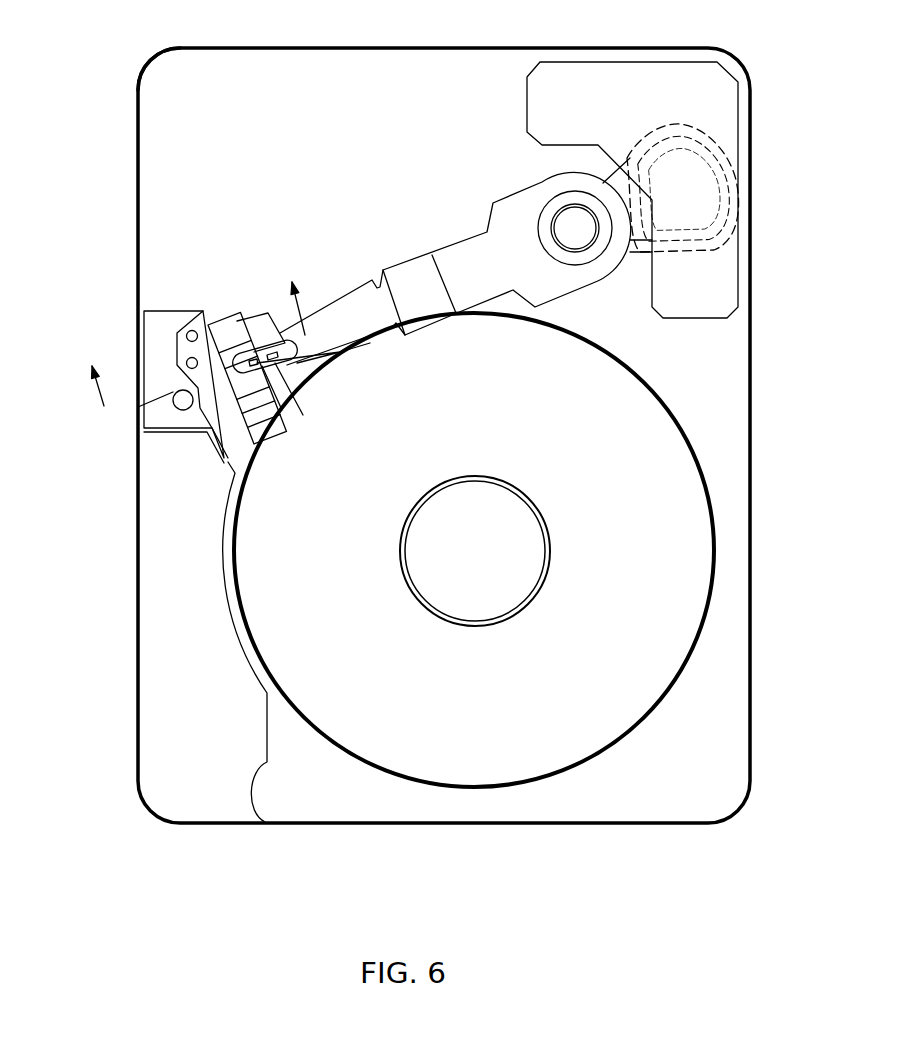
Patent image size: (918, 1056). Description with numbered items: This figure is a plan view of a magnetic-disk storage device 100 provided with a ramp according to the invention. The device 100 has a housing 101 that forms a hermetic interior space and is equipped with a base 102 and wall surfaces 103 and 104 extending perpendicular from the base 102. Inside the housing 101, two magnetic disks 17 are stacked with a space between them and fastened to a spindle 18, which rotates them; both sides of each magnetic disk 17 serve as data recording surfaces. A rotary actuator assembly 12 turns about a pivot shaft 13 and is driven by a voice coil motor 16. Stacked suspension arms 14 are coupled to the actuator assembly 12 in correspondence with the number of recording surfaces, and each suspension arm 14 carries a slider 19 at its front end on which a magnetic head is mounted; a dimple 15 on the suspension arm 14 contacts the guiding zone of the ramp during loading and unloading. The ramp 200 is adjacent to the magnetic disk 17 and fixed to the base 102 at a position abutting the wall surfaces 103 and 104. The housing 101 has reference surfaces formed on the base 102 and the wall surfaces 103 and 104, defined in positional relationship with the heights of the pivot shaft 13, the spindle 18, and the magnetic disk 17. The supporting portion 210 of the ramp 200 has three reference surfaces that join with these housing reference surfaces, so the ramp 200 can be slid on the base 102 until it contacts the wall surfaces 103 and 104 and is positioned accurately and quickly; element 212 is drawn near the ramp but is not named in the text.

The magnetic-disk storage device 100 is at (463, 27).
The housing 101 is at (136, 745).
The base 102 is at (234, 449).
The wall surface 103 is at (130, 117).
The wall surface 104 is at (172, 432).
The rotary actuator assembly 12 is at (477, 267).
The pivot shaft 13 is at (577, 223).
The suspension arm 14 is at (342, 305).
The dimple 15 is at (257, 366).
The voice coil motor 16 is at (720, 100).
The magnetic disk 17 is at (678, 475).
The spindle 18 is at (489, 561).
The slider 19 is at (262, 362).
The ramp 200 is at (240, 305).
The supporting portion 210 is at (192, 328).
The pin 212 is at (175, 408).